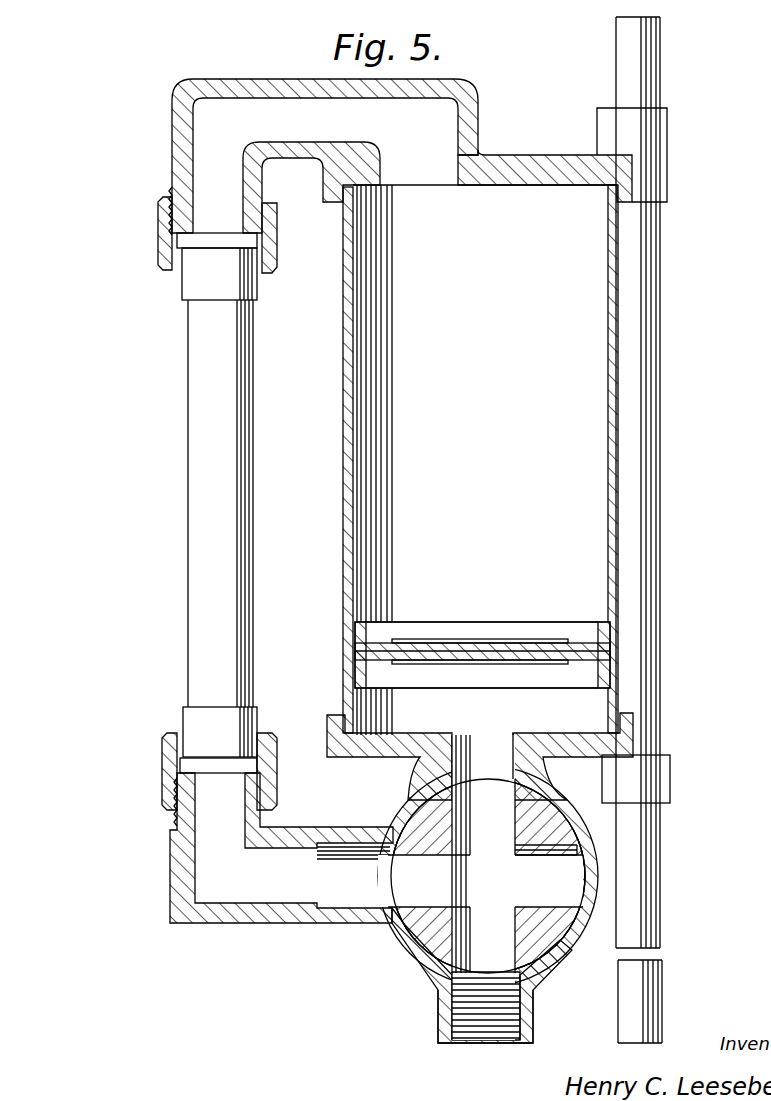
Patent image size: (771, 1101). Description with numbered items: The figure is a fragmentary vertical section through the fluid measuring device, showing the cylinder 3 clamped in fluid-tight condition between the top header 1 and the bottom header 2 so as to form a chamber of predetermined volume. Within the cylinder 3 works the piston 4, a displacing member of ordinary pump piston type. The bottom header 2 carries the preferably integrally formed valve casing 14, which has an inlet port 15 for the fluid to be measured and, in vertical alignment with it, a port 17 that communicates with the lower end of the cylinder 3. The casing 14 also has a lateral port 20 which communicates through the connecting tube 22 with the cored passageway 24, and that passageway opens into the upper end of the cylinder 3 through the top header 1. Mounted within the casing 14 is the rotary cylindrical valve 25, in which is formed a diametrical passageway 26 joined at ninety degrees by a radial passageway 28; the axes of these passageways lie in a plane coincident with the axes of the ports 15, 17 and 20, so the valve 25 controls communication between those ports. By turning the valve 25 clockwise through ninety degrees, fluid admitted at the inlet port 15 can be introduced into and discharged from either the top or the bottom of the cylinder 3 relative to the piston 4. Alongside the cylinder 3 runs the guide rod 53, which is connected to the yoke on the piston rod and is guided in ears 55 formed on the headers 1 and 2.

The top header 1 is at (530, 155).
The bottom header 2 is at (612, 745).
The cylinder 3 is at (421, 460).
The piston 4 is at (494, 640).
The valve casing 14 is at (593, 883).
The inlet port 15 is at (495, 1040).
The port 17 is at (495, 752).
The lateral port 20 is at (349, 895).
The connecting tube 22 is at (190, 578).
The cored passageway 24 is at (205, 137).
The rotary cylindrical valve 25 is at (413, 932).
The diametrical passageway 26 is at (481, 887).
The radial passageway 28 is at (552, 895).
The guide rod 53 is at (622, 74).
The ears 55 is at (605, 123).